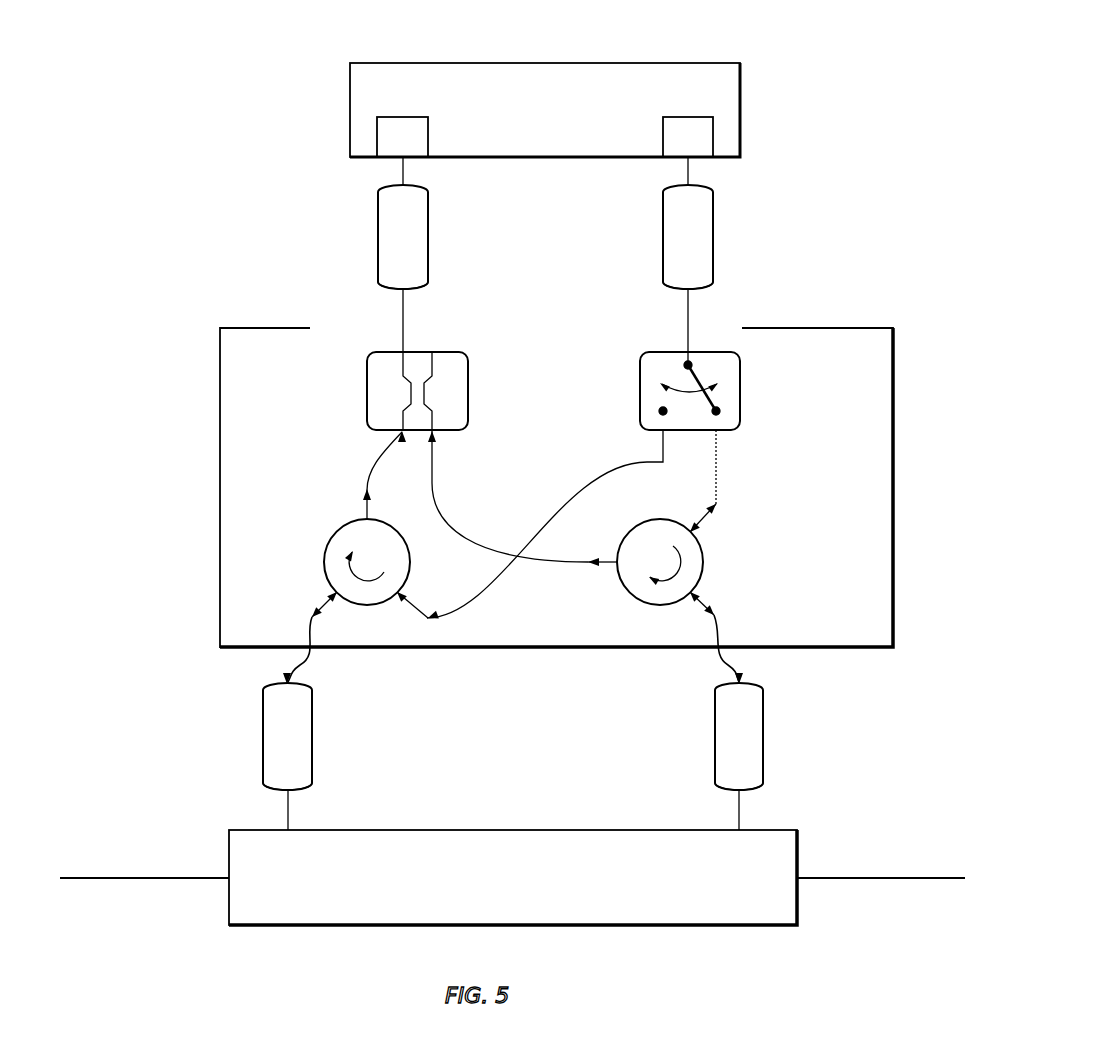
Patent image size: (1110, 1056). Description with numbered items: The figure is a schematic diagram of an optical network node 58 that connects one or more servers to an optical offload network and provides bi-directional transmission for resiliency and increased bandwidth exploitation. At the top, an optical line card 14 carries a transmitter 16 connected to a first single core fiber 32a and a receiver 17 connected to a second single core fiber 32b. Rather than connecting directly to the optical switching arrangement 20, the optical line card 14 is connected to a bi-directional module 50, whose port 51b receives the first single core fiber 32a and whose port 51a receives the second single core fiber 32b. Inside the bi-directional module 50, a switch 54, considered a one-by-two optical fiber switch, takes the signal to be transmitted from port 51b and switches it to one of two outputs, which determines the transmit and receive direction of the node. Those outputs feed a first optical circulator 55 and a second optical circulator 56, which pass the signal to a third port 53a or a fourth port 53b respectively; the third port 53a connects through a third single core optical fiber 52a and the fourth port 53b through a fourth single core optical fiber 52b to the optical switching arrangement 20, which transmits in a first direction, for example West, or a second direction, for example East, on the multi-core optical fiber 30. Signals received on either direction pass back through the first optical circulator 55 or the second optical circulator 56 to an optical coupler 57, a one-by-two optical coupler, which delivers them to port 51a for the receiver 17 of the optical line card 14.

The optical network node 58 is at (233, 61).
The optical line card 14 is at (372, 63).
The receiver 17 is at (377, 125).
The transmitter 16 is at (714, 125).
The second single core fiber 32b is at (429, 206).
The first single core fiber 32a is at (662, 206).
The port of the bi-directional module 51a is at (403, 328).
The port of the bi-directional module 51b is at (688, 328).
The bi-directional module 50 is at (220, 340).
The optical coupler 57 is at (468, 365).
The switch 54 is at (640, 366).
The first optical circulator 55 is at (333, 532).
The second optical circulator 56 is at (622, 590).
The third port 53a is at (303, 650).
The fourth port 53b is at (720, 650).
The third single core optical fiber 52a is at (313, 737).
The fourth single core optical fiber 52b is at (714, 737).
The multi-core optical fiber 30 is at (143, 878).
The optical switching arrangement 20 is at (775, 925).